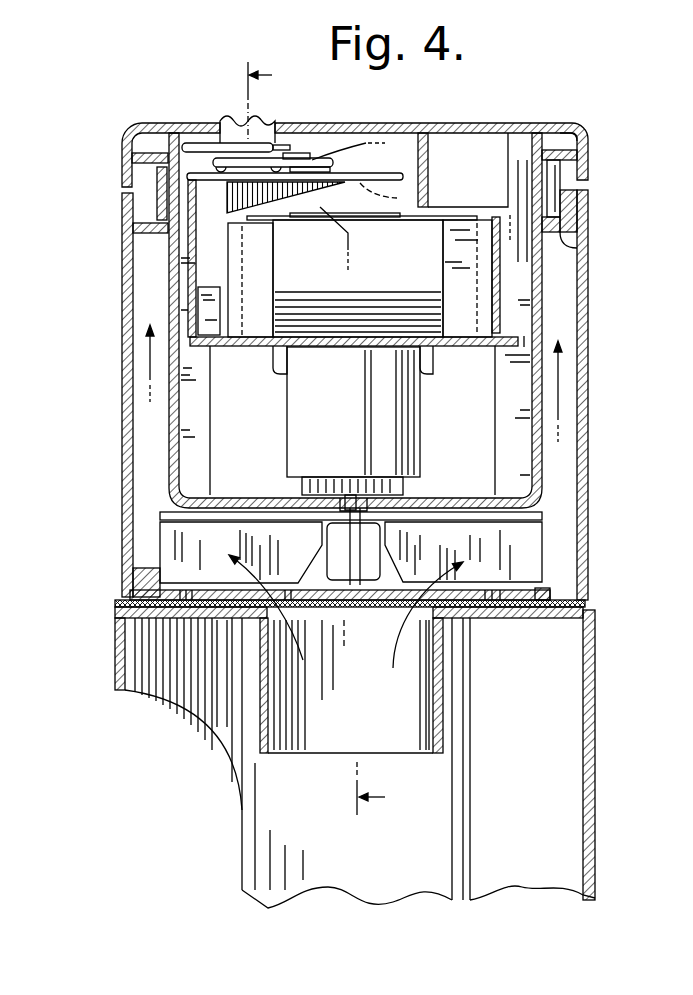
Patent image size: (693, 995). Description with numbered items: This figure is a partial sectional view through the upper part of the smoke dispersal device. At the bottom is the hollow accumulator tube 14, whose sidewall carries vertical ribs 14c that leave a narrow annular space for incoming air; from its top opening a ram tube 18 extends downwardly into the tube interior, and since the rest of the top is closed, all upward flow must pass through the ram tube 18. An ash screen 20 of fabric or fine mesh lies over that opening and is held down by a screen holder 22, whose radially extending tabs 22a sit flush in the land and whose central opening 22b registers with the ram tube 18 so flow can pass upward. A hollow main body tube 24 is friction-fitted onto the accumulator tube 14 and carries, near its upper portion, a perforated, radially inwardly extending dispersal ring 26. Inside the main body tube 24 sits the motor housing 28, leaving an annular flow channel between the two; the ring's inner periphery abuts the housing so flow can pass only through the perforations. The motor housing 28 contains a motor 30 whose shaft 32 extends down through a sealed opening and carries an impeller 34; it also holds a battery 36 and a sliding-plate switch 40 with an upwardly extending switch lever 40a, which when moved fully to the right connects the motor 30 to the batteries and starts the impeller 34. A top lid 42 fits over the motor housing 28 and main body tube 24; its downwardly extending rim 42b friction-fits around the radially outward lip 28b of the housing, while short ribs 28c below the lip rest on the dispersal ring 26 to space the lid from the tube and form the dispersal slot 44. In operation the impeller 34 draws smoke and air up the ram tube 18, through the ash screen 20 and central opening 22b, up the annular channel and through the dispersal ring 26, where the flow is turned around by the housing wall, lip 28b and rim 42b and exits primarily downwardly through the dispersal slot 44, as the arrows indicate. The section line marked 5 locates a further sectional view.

The section line 5- 5 is at (333, 440).
The accumulator tube 14 is at (595, 765).
The vertical ribs 14c is at (467, 862).
The ram tube 18 is at (440, 723).
The ash screen 20 is at (500, 620).
The screen holder 22 is at (552, 590).
The radially extending tabs 22a is at (585, 606).
The central opening 22b is at (294, 627).
The main body tube 24 is at (587, 365).
The dispersal ring 26 is at (568, 232).
The motor housing 28 is at (540, 291).
The lip 28b is at (582, 125).
The short ribs 28c is at (548, 207).
The motor 30 is at (398, 421).
The shaft 32 is at (397, 624).
The impeller 34 is at (527, 542).
The battery 36 is at (417, 290).
The sliding-plate switch 40 is at (290, 142).
The switch lever 40a is at (236, 115).
The top lid 42 is at (518, 122).
The rim 42b is at (587, 167).
The dispersal slot 44 is at (143, 295).